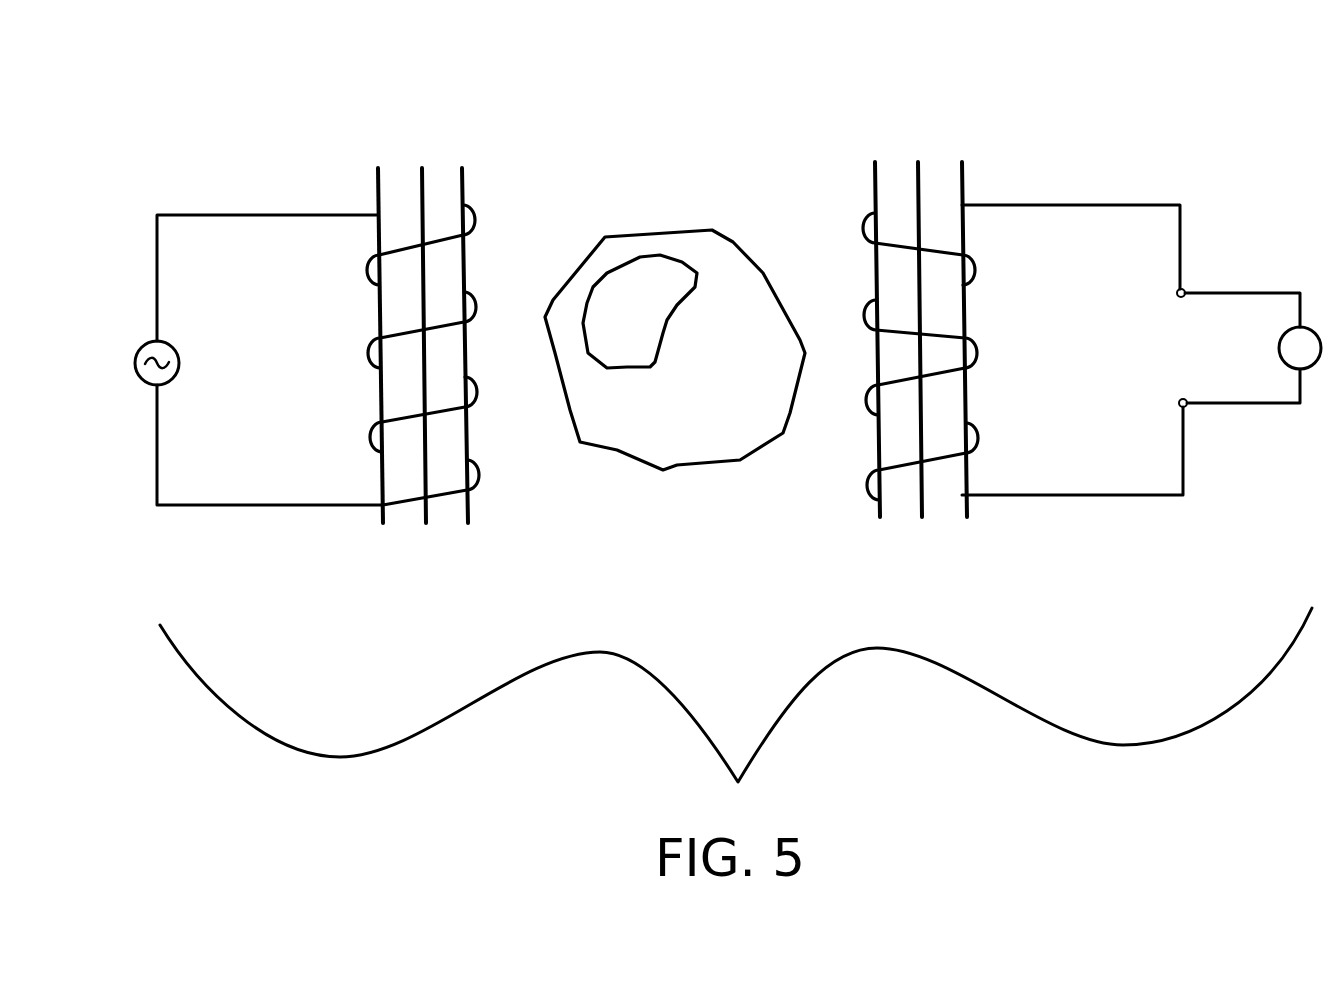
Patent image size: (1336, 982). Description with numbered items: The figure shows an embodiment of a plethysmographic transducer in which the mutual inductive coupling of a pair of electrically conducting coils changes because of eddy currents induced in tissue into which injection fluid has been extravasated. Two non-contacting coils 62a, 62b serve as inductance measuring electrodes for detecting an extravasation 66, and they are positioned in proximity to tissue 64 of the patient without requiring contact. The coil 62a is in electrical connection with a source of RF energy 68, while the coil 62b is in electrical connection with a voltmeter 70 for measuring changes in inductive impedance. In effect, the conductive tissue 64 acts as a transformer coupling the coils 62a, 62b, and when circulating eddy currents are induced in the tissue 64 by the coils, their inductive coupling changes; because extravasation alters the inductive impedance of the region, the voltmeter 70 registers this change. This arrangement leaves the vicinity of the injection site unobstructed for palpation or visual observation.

The coil 62a is at (470, 210).
The coil 62b is at (857, 208).
The tissue 64 is at (673, 428).
The extravasation 66 is at (645, 345).
The source of RF energy 68 is at (179, 366).
The voltmeter 70 is at (1285, 328).